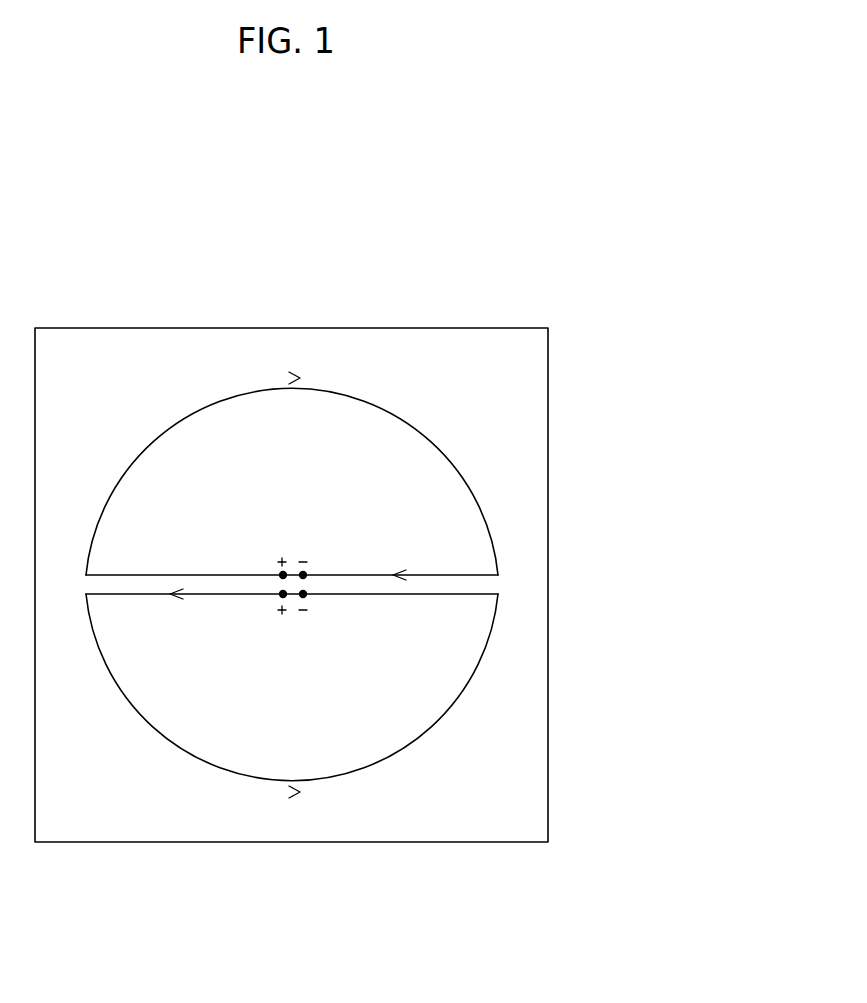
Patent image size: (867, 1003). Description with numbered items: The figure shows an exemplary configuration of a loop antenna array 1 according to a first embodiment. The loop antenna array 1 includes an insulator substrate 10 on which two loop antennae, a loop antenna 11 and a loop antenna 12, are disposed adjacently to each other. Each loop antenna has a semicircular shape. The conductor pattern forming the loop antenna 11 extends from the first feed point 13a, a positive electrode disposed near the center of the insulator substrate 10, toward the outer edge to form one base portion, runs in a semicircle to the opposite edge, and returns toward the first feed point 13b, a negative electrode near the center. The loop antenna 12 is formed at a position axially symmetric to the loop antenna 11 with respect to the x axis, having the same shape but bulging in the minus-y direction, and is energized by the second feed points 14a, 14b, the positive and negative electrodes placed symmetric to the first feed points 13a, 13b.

The loop antenna array 1 is at (340, 287).
The insulator substrate 10 is at (452, 328).
The loop antenna 11 is at (147, 441).
The loop antenna 12 is at (170, 752).
The first feed point 13a is at (282, 574).
The first feed point 13b is at (304, 574).
The second feed point 14a is at (282, 596).
The second feed point 14b is at (304, 596).